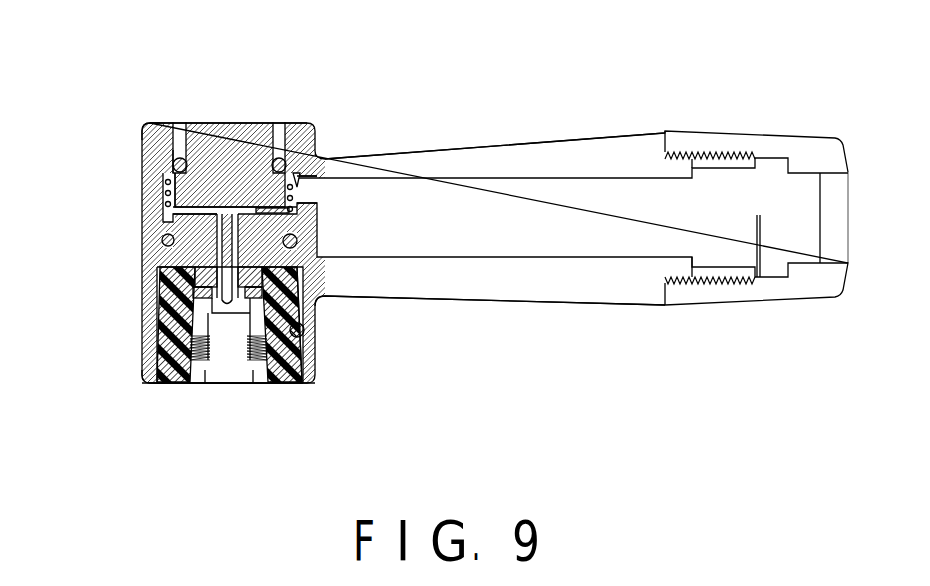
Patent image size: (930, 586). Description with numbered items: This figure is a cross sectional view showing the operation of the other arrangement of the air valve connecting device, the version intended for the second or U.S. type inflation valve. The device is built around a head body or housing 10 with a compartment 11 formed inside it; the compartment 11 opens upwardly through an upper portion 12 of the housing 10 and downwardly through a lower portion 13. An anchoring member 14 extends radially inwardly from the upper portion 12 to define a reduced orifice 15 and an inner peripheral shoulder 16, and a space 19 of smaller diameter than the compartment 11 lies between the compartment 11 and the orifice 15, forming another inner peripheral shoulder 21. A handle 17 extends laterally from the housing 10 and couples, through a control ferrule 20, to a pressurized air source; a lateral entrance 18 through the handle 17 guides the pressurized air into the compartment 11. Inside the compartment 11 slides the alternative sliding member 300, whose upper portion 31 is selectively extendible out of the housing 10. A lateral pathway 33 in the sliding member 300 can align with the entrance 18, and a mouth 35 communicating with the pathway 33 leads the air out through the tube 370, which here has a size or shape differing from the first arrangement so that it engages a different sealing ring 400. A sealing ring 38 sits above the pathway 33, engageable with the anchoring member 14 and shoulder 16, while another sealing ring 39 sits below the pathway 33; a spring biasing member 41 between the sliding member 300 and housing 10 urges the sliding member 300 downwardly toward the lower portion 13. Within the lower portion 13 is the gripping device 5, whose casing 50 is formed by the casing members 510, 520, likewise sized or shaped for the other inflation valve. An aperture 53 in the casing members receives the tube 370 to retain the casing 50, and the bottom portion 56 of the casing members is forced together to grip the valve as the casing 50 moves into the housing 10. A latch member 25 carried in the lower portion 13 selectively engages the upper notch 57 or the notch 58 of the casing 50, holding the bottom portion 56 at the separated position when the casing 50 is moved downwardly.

The gripping device 5 is at (158, 384).
The housing 10 is at (150, 318).
The compartment 11 is at (168, 213).
The upper portion 12 is at (168, 122).
The lower portion 13 is at (142, 372).
The anchoring member 14 is at (280, 122).
The orifice 15 is at (197, 122).
The inner peripheral shoulder 16 is at (145, 127).
The handle 17 is at (530, 152).
The entrance 18 is at (308, 186).
The space 19 is at (175, 148).
The control ferrule 20 is at (725, 145).
The inner peripheral shoulder 21 is at (297, 176).
The latch member 25 is at (303, 331).
The upper portion 31 is at (238, 135).
The pathway 33 is at (252, 212).
The mouth 35 is at (233, 252).
The sealing ring 38 is at (175, 158).
The sealing ring 39 is at (163, 240).
The spring biasing member 41 is at (165, 193).
The casing 50 is at (287, 384).
The aperture 53 is at (233, 380).
The bottom portion 56 is at (183, 384).
The upper notch 57 is at (303, 338).
The notch 58 is at (305, 348).
The sliding member 300 is at (195, 185).
The tube 370 is at (197, 277).
The sealing ring 400 is at (175, 290).
The casing member 510 is at (320, 296).
The casing member 520 is at (158, 336).